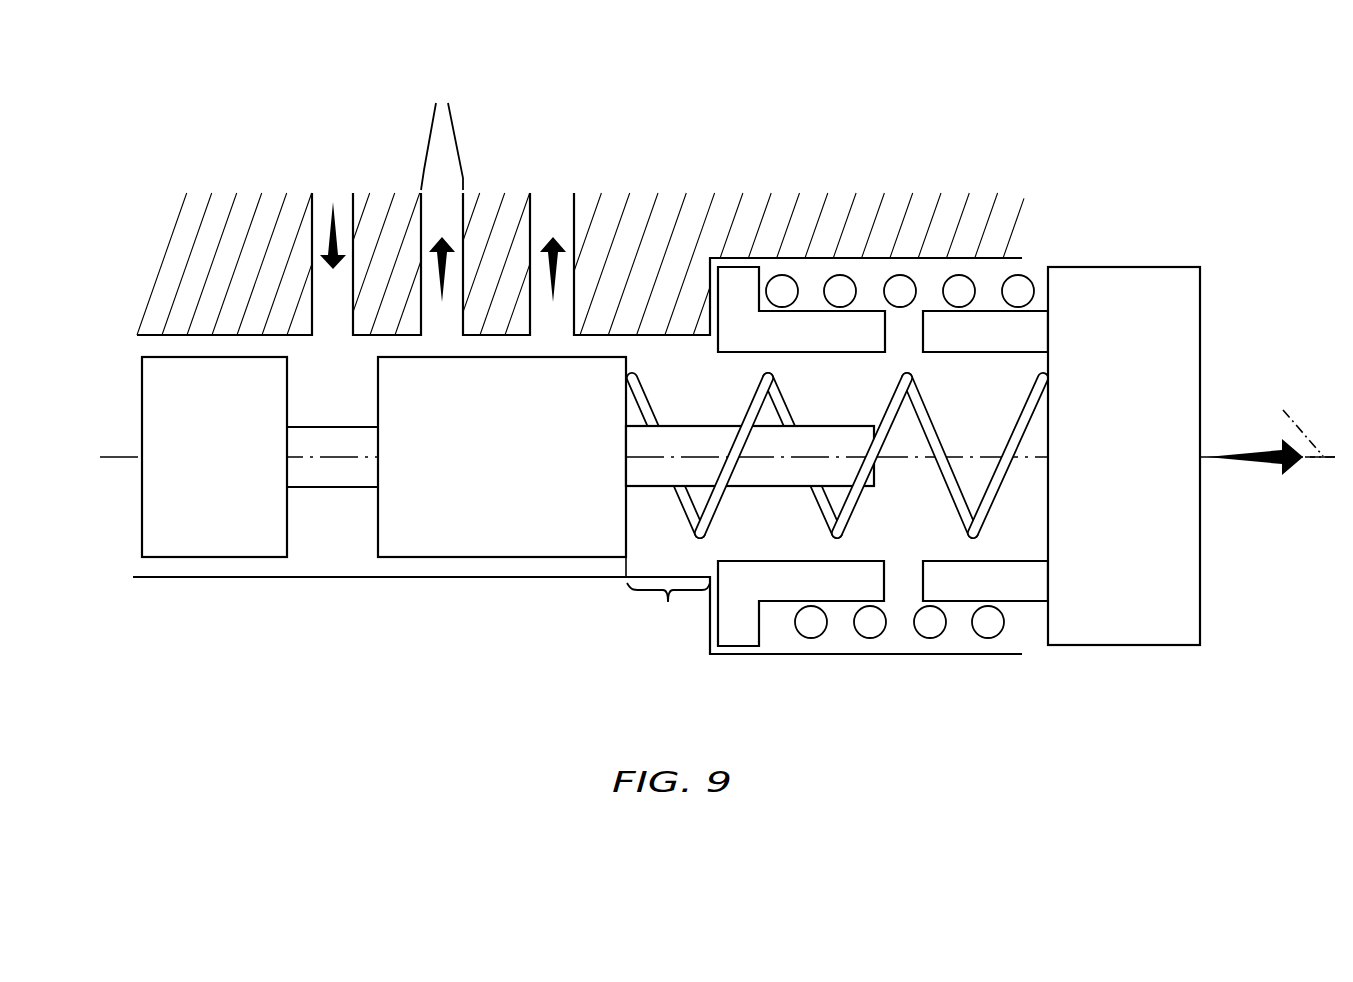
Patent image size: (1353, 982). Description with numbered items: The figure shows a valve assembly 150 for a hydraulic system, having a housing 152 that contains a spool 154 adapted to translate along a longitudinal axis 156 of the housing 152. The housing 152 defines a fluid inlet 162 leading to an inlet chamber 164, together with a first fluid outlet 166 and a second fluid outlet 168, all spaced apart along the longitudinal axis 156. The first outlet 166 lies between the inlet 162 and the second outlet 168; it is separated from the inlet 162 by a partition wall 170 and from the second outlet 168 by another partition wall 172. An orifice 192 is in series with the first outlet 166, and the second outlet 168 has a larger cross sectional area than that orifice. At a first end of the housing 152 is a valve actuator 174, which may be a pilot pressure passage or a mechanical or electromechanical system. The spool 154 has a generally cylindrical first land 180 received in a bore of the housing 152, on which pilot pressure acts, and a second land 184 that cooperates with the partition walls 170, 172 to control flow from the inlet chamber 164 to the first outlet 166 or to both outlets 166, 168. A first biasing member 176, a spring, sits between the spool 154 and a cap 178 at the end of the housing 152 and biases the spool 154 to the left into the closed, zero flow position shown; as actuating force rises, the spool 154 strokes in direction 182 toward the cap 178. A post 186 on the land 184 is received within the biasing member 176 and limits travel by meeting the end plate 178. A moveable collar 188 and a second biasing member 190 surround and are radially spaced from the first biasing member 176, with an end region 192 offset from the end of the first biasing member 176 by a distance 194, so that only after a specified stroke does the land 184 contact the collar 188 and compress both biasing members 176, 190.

The valve assembly 150 is at (162, 137).
The housing 152 is at (580, 218).
The spool 154 is at (327, 473).
The longitudinal axis 156 is at (1301, 418).
The fluid inlet 162 is at (325, 207).
The inlet chamber 164 is at (359, 398).
The first fluid outlet 166 is at (458, 156).
The second fluid outlet 168 is at (558, 223).
The partition wall 170 is at (393, 203).
The partition wall 172 is at (507, 232).
The valve actuator 174 is at (349, 489).
The first biasing member 176 is at (814, 544).
The cap 178 is at (1119, 573).
The first land 180 is at (187, 530).
The direction 182 is at (1285, 466).
The second land 184 is at (433, 560).
The post 186 is at (649, 473).
The moveable collar 188 is at (837, 583).
The second biasing member 190 is at (812, 625).
The end region 192 is at (443, 118).
The distance 194 is at (668, 602).